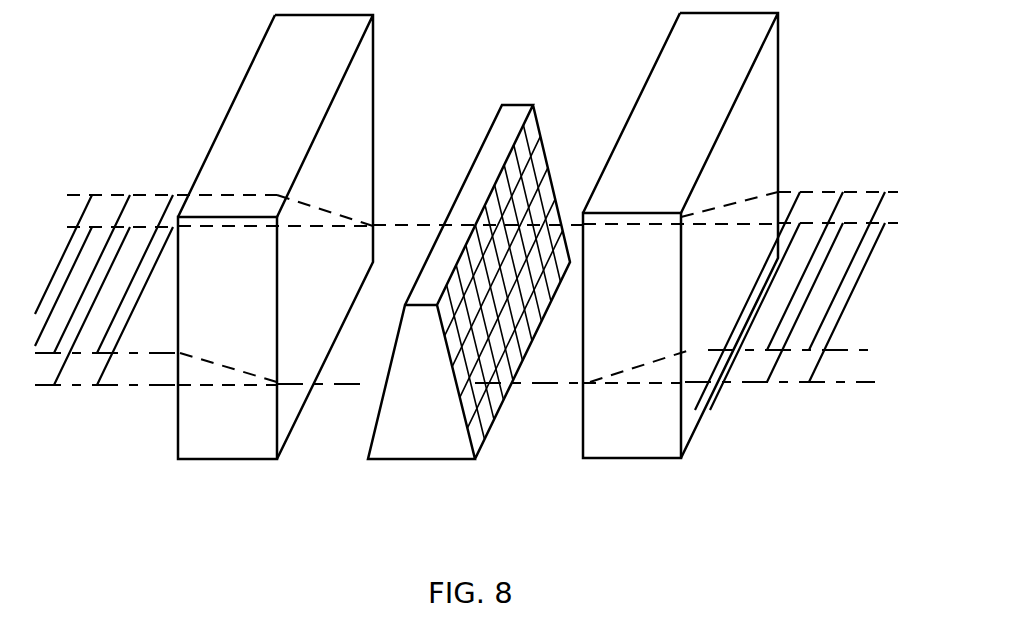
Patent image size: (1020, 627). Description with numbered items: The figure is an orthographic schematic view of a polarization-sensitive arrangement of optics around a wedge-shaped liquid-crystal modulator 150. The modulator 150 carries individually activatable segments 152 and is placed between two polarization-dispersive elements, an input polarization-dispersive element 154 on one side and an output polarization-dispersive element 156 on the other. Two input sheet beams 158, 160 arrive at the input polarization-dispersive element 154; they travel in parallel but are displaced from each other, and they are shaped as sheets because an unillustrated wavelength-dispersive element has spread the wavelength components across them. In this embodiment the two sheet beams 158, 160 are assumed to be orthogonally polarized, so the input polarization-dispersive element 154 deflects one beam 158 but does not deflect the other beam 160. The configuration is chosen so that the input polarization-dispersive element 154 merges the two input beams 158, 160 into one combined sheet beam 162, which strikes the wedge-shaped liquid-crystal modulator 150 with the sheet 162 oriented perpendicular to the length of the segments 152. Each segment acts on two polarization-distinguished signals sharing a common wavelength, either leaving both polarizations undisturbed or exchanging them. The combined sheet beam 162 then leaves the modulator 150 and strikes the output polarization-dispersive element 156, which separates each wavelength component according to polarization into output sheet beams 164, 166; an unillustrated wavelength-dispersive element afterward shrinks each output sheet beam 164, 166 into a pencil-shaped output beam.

The wedge-shaped liquid-crystal modulator 150 is at (423, 450).
The individually activatable segments 152 is at (532, 180).
The input polarization-dispersive element 154 is at (230, 450).
The output polarization-dispersive element 156 is at (626, 448).
The input sheet beam 158 is at (117, 193).
The input sheet beam 160 is at (107, 388).
The combined sheet beam 162 is at (348, 387).
The output sheet beam 164 is at (820, 193).
The output sheet beam 166 is at (815, 383).